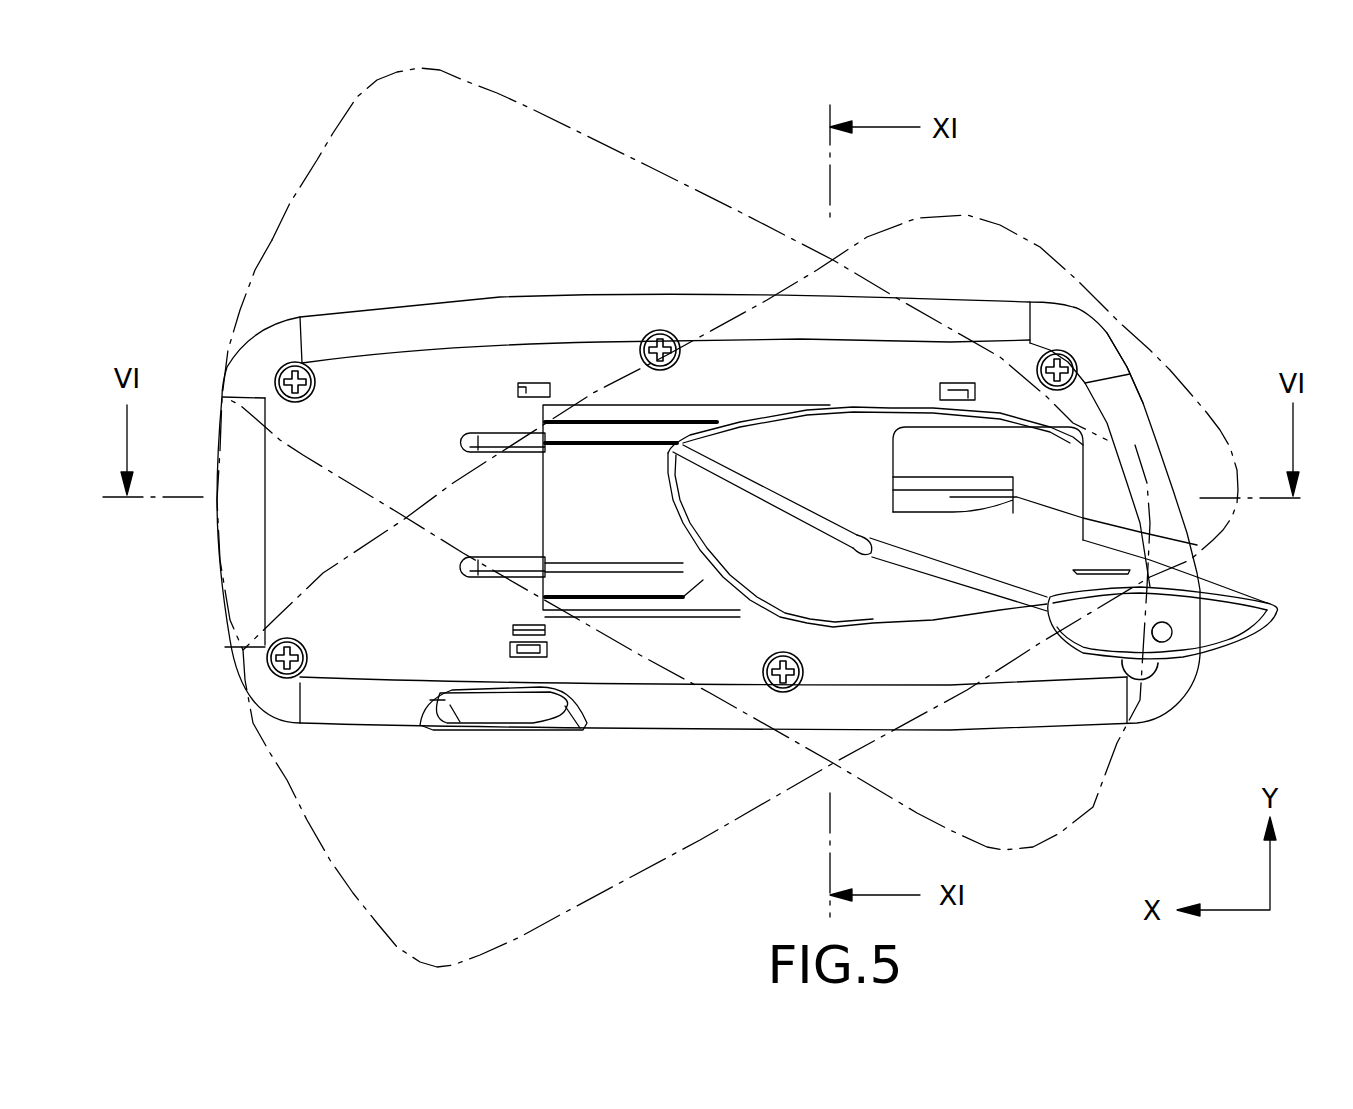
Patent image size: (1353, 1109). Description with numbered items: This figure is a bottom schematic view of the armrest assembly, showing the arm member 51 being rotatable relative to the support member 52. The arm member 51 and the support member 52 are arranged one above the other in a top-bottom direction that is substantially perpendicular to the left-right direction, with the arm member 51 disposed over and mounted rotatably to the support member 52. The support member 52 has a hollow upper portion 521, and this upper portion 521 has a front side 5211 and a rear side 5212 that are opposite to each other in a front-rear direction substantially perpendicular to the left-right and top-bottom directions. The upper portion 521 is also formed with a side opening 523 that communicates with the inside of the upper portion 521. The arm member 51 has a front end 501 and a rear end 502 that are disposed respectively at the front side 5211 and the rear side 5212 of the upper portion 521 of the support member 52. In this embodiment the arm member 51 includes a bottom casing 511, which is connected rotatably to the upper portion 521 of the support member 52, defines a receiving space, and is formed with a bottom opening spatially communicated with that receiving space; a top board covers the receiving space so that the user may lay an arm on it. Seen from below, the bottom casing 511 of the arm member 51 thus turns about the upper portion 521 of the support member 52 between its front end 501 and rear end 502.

The arm member 51 is at (613, 145).
The front end 501 is at (222, 610).
The bottom casing 511 is at (240, 545).
The rear end 502 is at (1133, 425).
The support member 52 is at (833, 480).
The upper portion 521 is at (962, 643).
The front side 5211 is at (673, 510).
The rear side 5212 is at (1090, 483).
The side opening 523 is at (1197, 545).